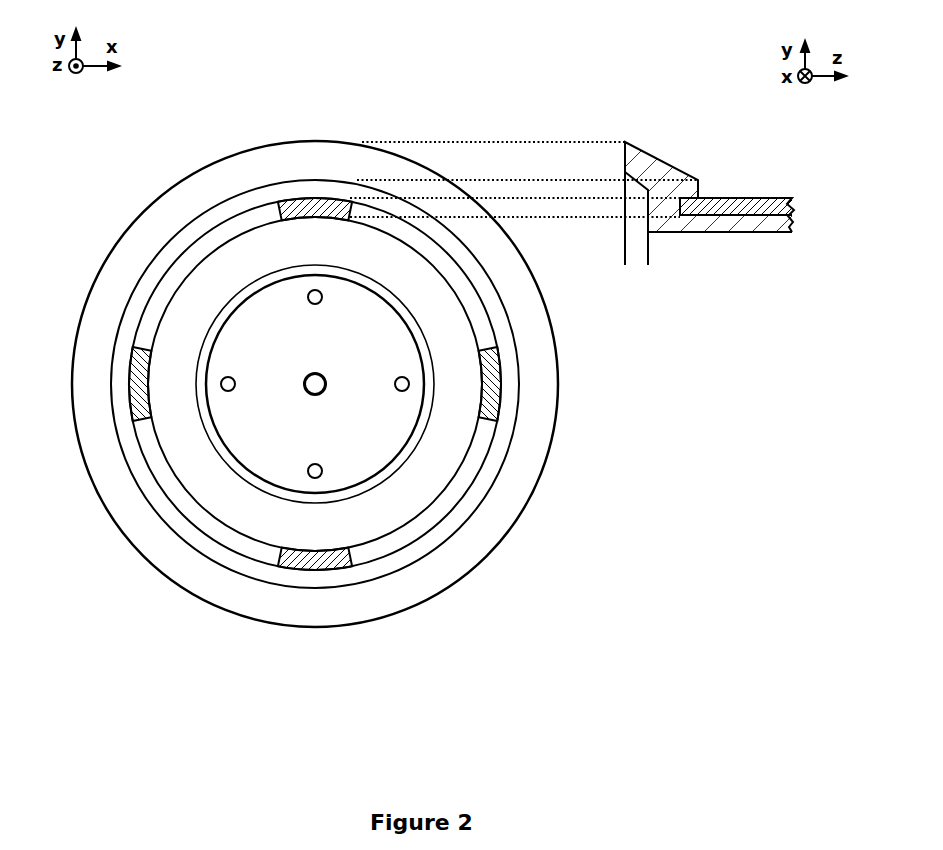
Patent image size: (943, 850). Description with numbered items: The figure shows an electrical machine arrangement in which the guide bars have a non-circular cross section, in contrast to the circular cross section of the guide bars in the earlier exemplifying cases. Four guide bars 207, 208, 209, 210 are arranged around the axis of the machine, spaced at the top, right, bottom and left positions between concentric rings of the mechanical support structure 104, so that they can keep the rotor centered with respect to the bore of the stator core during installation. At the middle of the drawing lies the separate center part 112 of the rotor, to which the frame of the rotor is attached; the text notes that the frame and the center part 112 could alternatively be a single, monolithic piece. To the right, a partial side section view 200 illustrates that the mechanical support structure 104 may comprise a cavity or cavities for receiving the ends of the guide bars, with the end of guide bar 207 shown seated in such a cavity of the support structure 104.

The mechanical support structure 104 is at (455, 450).
The center part 112 is at (298, 357).
The partial side section view 200 is at (765, 294).
The guide bar 207 is at (313, 200).
The guide bar 208 is at (503, 383).
The guide bar 209 is at (315, 568).
The guide bar 210 is at (131, 388).